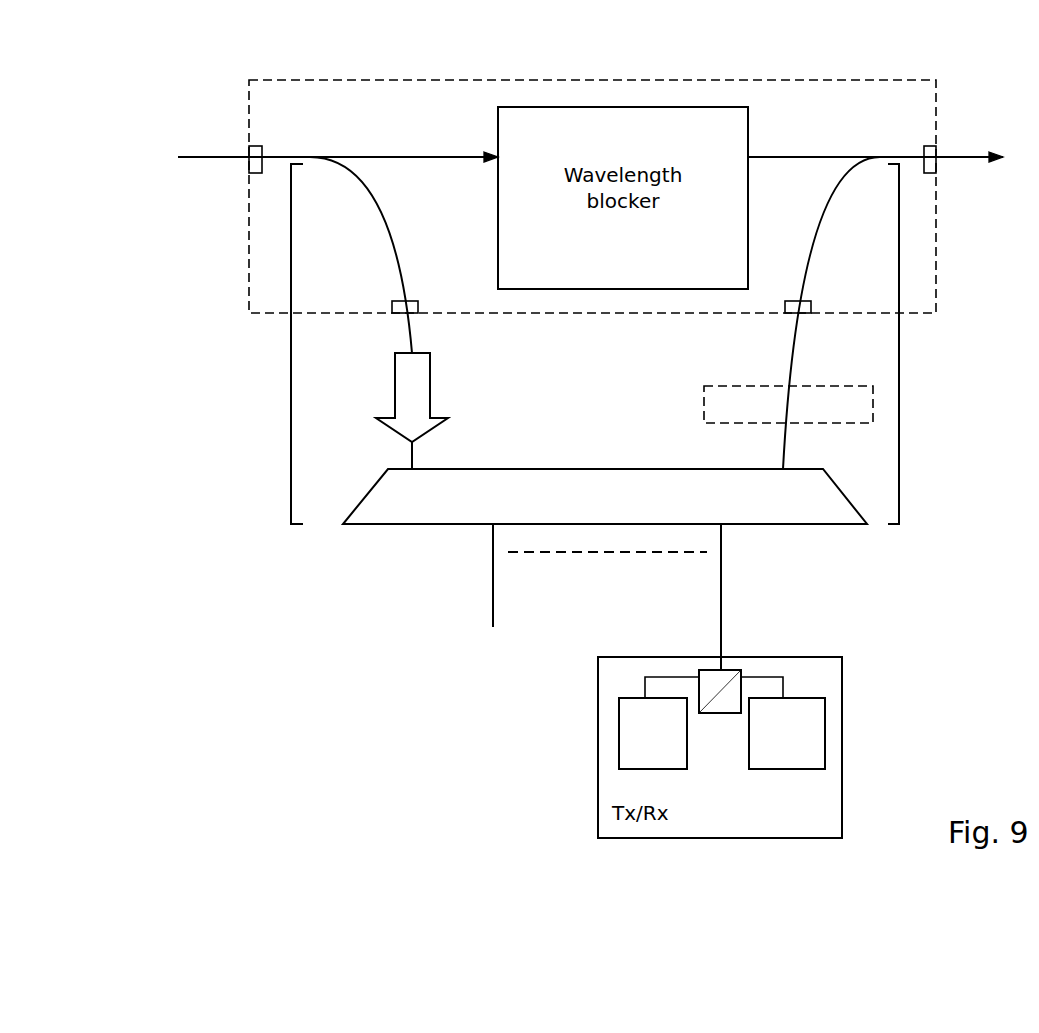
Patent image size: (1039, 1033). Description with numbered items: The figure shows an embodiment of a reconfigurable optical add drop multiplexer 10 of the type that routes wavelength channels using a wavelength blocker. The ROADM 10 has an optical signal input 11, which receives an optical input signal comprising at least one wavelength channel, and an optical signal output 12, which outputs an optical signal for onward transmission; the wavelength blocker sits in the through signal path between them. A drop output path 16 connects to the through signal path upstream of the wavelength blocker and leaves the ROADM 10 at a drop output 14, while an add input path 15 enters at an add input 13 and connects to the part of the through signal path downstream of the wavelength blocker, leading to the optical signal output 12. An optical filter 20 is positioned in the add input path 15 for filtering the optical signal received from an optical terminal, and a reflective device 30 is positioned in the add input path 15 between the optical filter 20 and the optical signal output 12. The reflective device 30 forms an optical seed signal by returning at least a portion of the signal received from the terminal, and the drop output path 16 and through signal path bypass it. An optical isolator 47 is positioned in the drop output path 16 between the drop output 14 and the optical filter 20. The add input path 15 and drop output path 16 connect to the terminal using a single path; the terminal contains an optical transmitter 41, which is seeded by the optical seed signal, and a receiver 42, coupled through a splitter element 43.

The reconfigurable optical add drop multiplexer 10 is at (505, 80).
The optical signal input 11 is at (249, 148).
The optical signal output 12 is at (936, 148).
The add input 13 is at (811, 312).
The drop output 14 is at (392, 312).
The add input path 15 is at (899, 343).
The drop output path 16 is at (291, 344).
The optical isolator 47 is at (395, 385).
The optical filter 20 is at (590, 469).
The reflective device 30 is at (820, 423).
The optical transmitter 41 is at (618, 730).
The receiver 42 is at (825, 733).
The optical coupler / splitter 43 is at (728, 670).